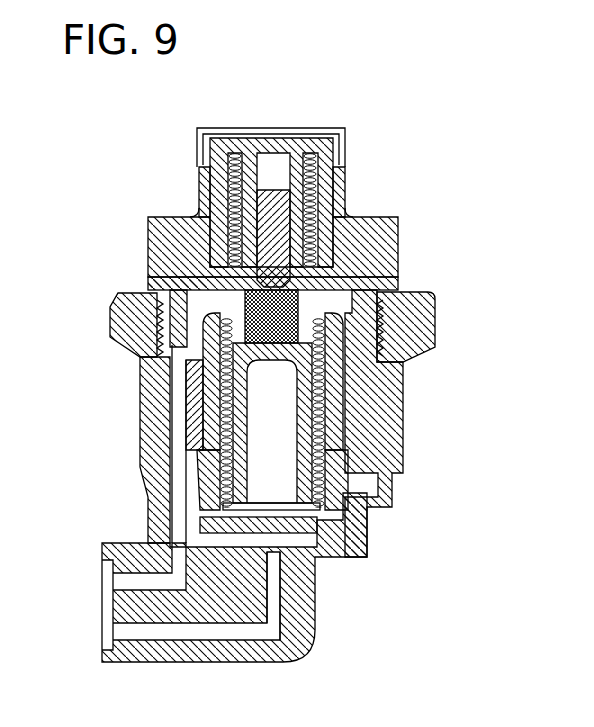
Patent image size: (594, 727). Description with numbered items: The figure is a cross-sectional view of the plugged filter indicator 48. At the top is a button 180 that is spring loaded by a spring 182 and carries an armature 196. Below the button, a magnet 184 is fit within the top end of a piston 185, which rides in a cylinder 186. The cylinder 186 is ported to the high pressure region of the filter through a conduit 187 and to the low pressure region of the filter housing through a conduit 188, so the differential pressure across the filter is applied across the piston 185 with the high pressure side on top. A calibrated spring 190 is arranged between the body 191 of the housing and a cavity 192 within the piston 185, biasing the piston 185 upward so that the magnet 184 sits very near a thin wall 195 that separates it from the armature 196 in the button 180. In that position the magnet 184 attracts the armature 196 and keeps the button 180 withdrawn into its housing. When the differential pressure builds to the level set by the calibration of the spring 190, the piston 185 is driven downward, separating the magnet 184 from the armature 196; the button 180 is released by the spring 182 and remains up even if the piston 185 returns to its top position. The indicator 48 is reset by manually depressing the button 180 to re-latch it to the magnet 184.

The plugged filter indicator 48 is at (499, 261).
The button 180 is at (248, 137).
The spring 182 is at (272, 190).
The magnet 184 is at (398, 277).
The piston 185 is at (405, 357).
The cylinder 186 is at (380, 325).
The conduit 187 is at (183, 513).
The conduit 188 is at (272, 597).
The calibrated spring 190 is at (313, 420).
The body 191 is at (363, 548).
The cavity 192 is at (330, 382).
The thin wall 195 is at (147, 274).
The armature 196 is at (336, 174).